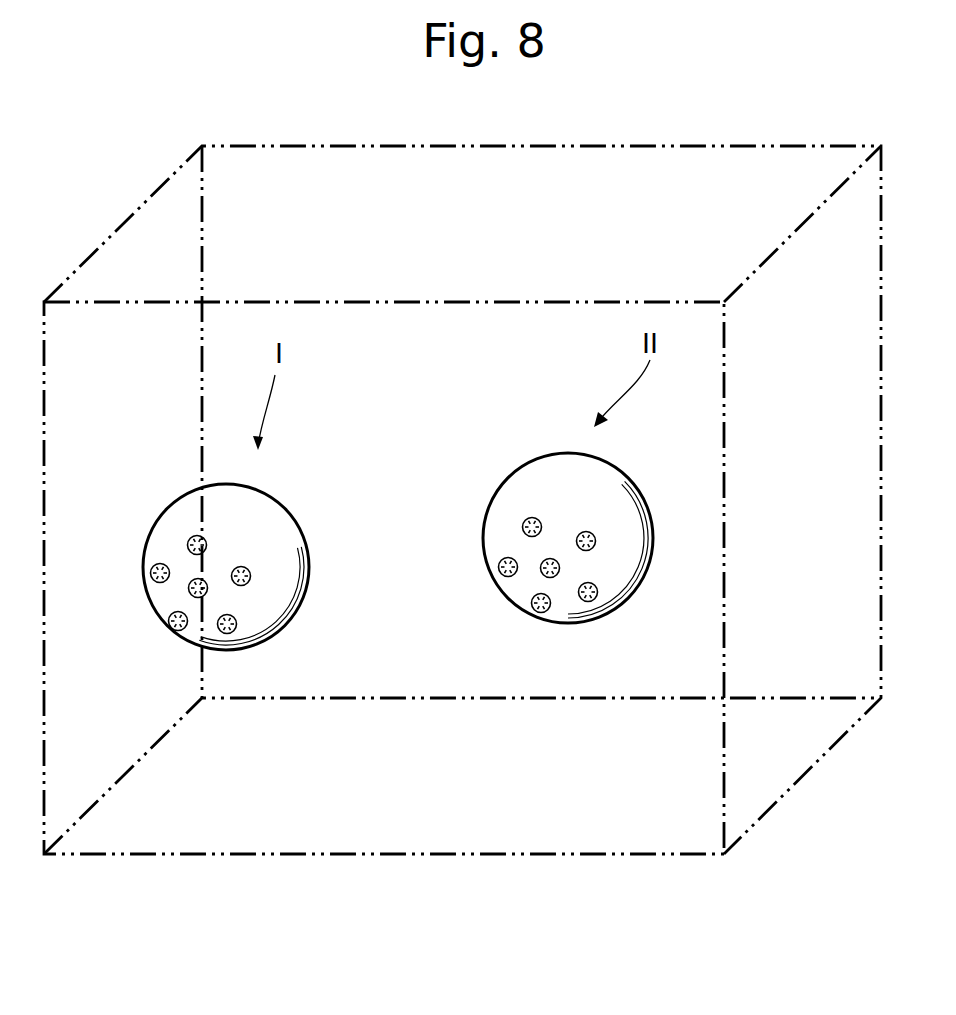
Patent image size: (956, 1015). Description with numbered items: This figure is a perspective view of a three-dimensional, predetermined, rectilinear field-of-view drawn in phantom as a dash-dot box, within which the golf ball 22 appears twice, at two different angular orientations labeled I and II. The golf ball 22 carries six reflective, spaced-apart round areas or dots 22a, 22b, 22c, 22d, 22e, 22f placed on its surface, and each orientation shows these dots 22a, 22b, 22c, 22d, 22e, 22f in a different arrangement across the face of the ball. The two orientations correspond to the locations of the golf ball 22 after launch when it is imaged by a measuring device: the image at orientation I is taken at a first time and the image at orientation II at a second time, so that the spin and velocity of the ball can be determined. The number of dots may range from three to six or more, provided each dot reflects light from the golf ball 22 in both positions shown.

The golf ball 22 is at (268, 500).
The reflective round area or dot 22a is at (192, 537).
The reflective round area or dot 22b is at (150, 572).
The reflective round area or dot 22c is at (186, 622).
The reflective round area or dot 22d is at (207, 580).
The reflective round area or dot 22e is at (251, 577).
The reflective round area or dot 22f is at (237, 624).